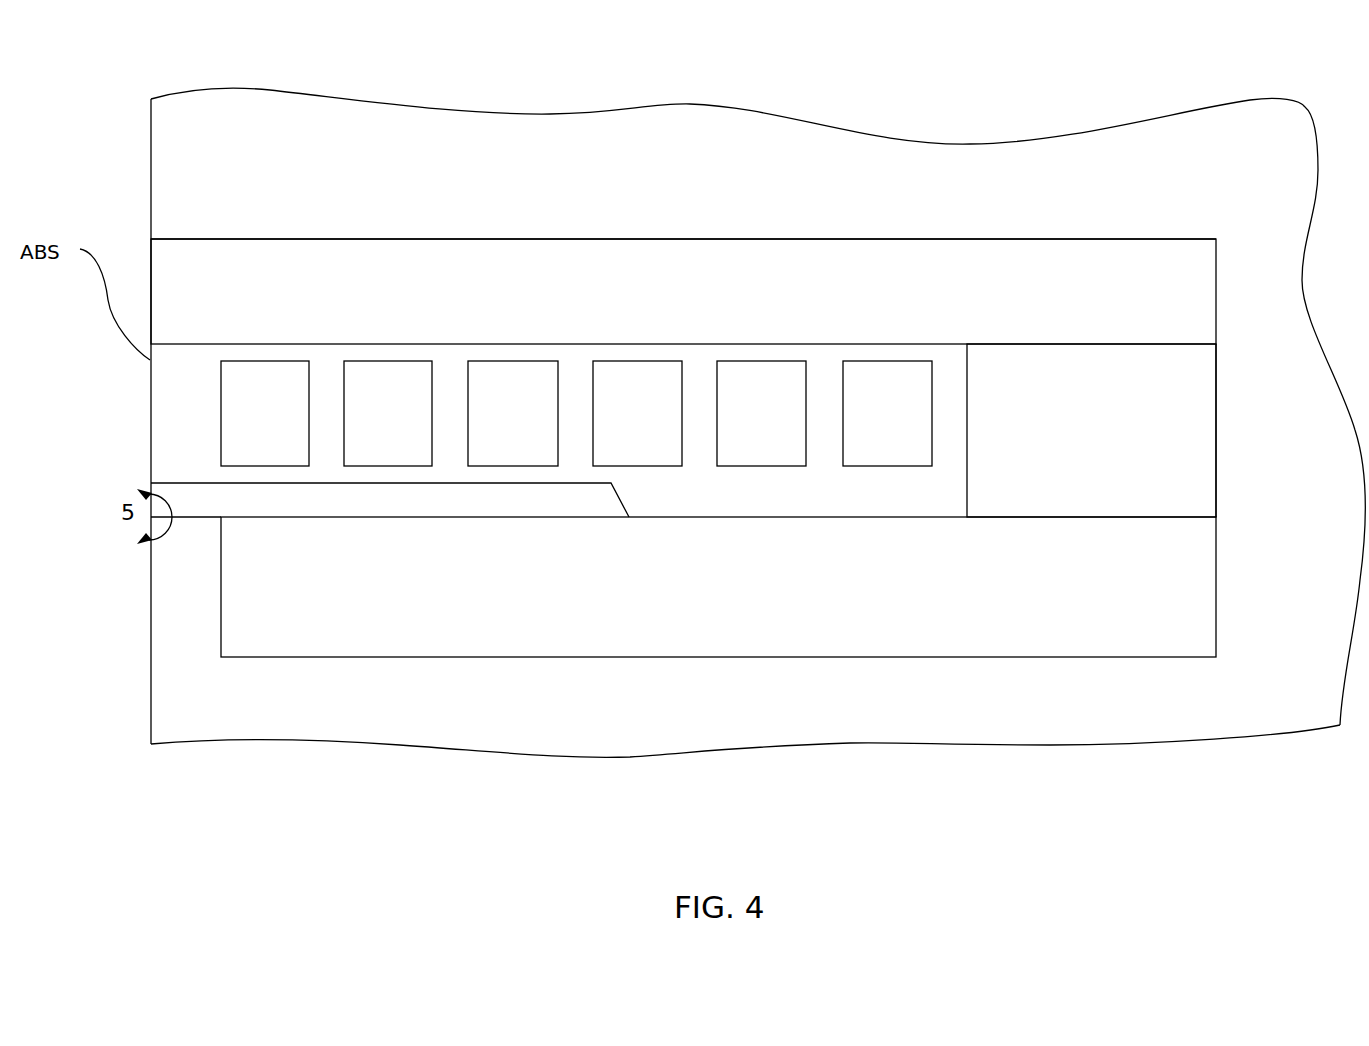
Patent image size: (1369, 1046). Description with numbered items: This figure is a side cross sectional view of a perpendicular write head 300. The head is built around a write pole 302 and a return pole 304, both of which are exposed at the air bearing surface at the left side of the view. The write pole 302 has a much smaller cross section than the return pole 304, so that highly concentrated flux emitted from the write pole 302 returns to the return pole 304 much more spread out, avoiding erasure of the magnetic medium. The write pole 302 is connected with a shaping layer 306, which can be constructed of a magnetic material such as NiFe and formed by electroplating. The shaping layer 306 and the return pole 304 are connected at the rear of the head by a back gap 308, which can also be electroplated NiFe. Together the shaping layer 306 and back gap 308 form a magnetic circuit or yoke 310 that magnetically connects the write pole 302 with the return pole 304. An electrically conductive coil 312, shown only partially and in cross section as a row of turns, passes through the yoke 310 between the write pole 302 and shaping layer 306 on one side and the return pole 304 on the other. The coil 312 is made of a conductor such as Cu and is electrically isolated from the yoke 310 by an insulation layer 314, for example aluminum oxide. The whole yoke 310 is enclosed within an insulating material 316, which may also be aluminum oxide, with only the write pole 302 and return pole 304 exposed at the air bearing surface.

The perpendicular write head 300 is at (1097, 74).
The write pole 302 is at (495, 507).
The return pole 304 is at (748, 290).
The shaping layer 306 is at (787, 586).
The back gap 308 is at (1136, 413).
The magnetic yoke 310 is at (1065, 178).
The electrically conductive coil 312 is at (666, 472).
The insulation layer 314 is at (907, 487).
The insulating material 316 is at (1344, 507).